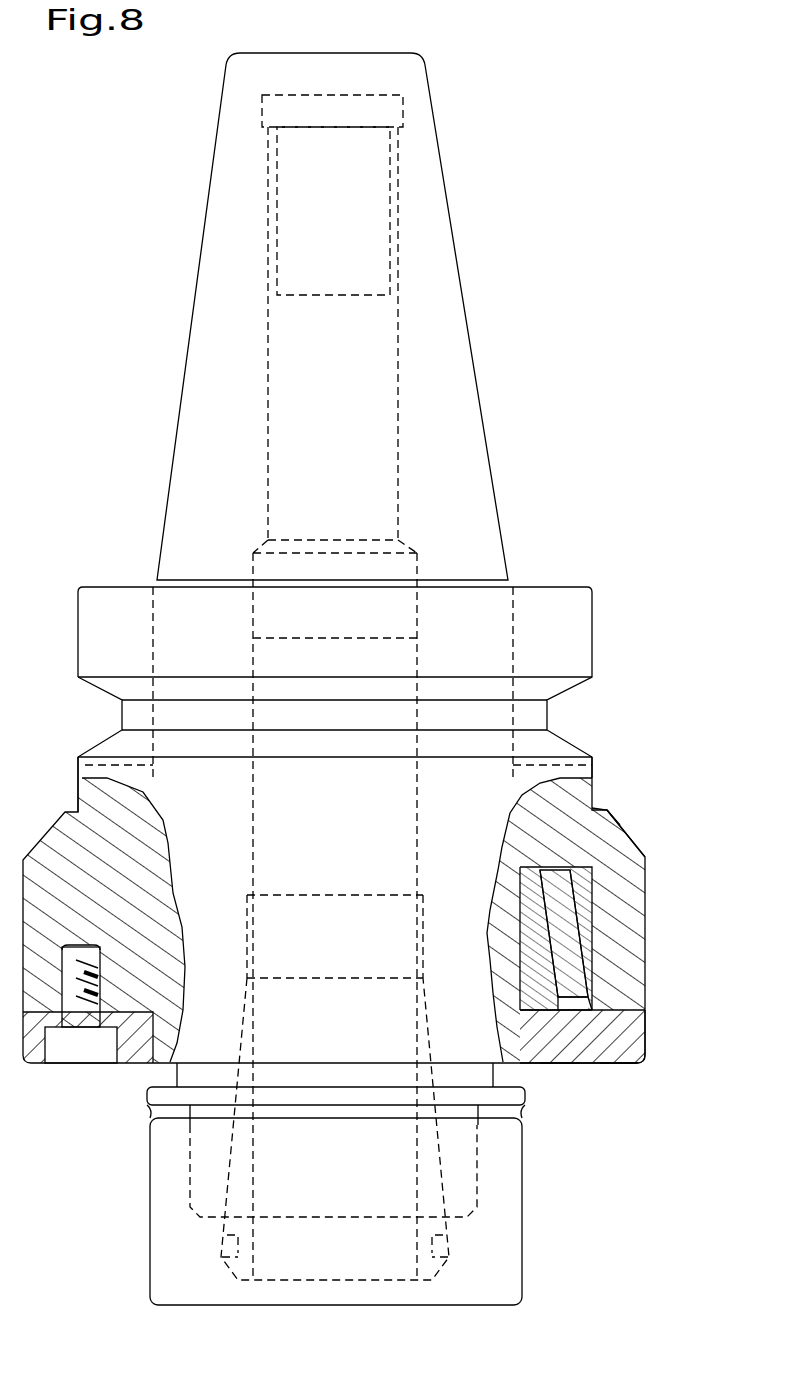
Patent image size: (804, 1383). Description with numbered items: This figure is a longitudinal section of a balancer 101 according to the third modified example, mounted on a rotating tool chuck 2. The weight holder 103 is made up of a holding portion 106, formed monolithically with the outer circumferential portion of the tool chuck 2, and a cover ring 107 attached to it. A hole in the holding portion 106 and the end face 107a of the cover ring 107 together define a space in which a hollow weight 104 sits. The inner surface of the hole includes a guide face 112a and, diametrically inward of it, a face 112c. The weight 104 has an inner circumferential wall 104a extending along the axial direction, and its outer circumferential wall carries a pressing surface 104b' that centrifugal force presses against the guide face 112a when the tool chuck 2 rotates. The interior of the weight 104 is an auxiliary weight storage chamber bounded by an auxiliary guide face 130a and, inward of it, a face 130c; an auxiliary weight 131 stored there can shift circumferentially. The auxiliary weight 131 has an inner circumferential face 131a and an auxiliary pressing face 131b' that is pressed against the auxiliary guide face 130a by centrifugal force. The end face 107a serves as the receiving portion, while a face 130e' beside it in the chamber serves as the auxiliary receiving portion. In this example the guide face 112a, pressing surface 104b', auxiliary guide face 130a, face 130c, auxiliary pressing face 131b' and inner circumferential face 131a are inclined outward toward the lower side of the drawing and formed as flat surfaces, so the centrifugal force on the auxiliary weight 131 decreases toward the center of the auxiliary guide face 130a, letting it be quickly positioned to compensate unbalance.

The tool chuck 2 is at (570, 613).
The balancer 101 is at (609, 809).
The auxiliary guide face 130a is at (635, 858).
The holding portion 106 is at (572, 868).
The pressing surface 104b' is at (656, 932).
The weight holder 103 is at (632, 907).
The auxiliary pressing face 131b' is at (665, 961).
The guide face 112a is at (598, 962).
The weight 104 is at (598, 1005).
The auxiliary weight 131 is at (648, 1023).
The cover ring 107 is at (640, 1040).
The end face 107a is at (612, 1047).
The face 130e' is at (571, 1078).
The face 112c is at (527, 897).
The face 130c is at (550, 923).
The inner circumferential face 131a is at (570, 993).
The inner circumferential wall 104a is at (545, 1010).